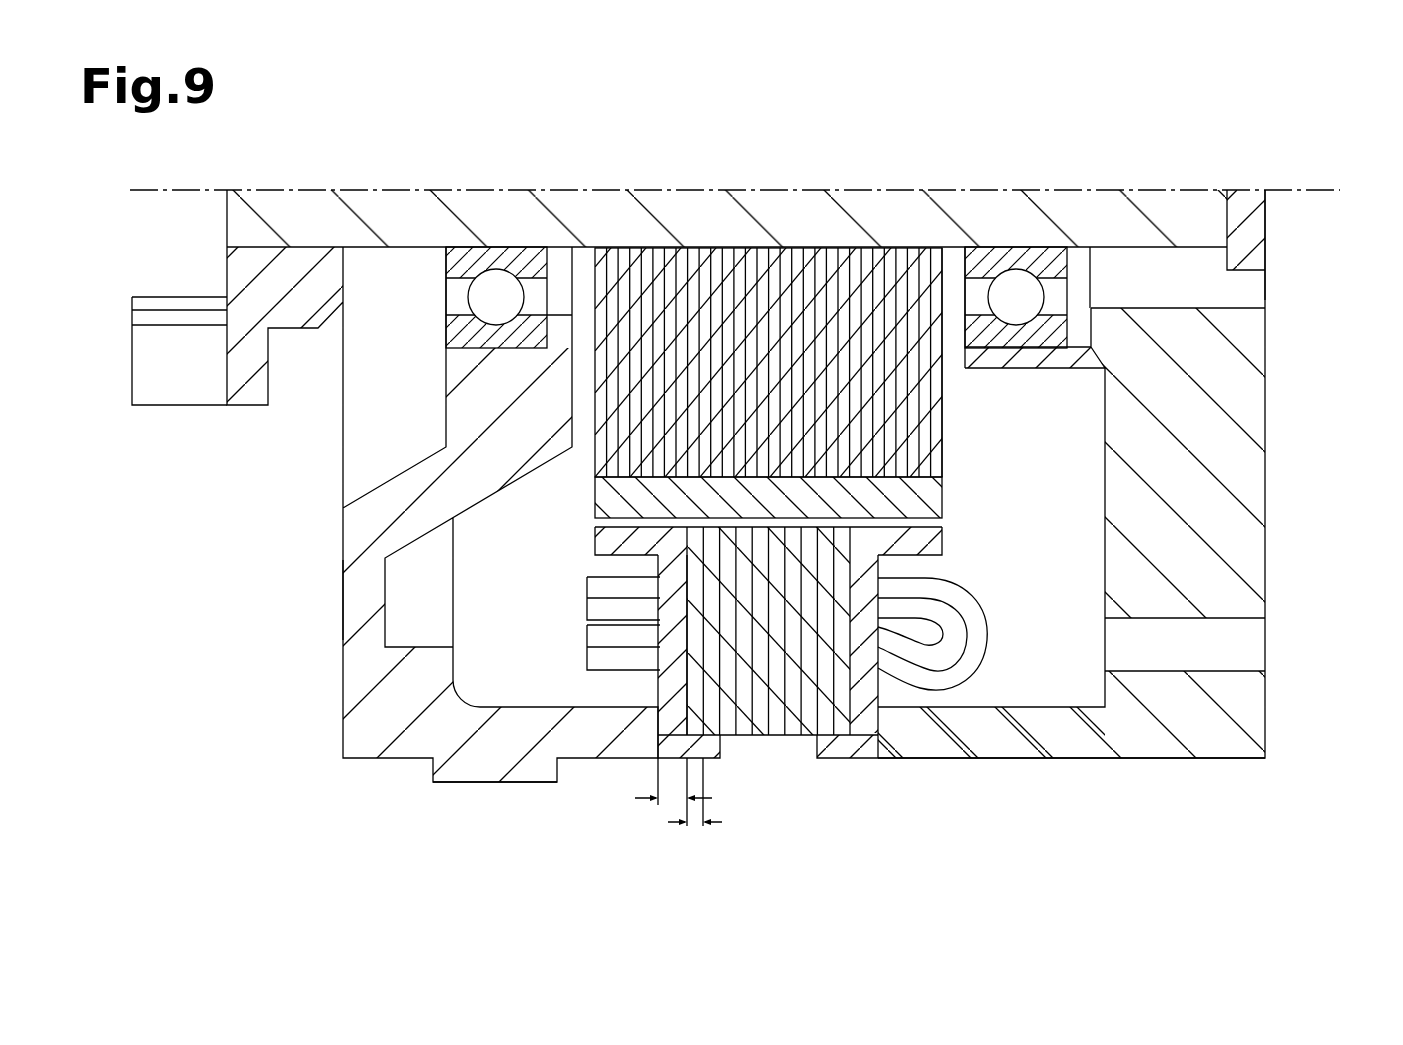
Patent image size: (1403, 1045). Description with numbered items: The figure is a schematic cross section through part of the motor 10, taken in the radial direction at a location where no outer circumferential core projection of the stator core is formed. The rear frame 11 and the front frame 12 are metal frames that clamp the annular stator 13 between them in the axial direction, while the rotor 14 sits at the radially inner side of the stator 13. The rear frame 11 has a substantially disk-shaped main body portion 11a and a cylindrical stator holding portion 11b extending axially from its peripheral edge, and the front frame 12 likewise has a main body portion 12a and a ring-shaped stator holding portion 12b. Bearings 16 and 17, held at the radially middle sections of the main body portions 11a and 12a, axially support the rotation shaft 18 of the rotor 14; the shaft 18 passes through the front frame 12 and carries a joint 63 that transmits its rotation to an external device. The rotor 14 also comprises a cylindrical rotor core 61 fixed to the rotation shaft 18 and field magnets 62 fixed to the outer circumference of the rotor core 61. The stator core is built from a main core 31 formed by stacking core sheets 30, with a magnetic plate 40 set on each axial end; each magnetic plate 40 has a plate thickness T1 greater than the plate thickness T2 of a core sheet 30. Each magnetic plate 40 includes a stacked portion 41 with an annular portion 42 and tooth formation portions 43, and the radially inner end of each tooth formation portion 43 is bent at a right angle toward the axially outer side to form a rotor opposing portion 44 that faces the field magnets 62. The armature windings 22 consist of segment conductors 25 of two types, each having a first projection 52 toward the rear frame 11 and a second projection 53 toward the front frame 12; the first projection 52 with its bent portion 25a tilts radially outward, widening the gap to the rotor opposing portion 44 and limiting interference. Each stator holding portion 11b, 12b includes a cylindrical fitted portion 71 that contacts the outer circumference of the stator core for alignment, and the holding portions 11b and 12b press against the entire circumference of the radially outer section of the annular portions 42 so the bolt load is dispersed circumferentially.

The motor 10 is at (1310, 325).
The rear frame 11 is at (1267, 482).
The main body portion 11a is at (1259, 547).
The stator holding portion 11b is at (997, 758).
The front frame 12 is at (343, 535).
The main body portion 12a is at (348, 597).
The stator holding portion 12b is at (575, 758).
The stator 13 is at (1018, 544).
The rotor 14 is at (950, 413).
The bearing 16 is at (1067, 266).
The bearing 17 is at (445, 265).
The rotation shaft 18 is at (1190, 237).
The armature windings 22 is at (985, 680).
The segment conductor 25 is at (975, 622).
The bent portion 25a is at (957, 680).
The core sheet 30 is at (776, 730).
The main core 31 is at (793, 735).
The magnetic plate 40 is at (658, 566).
The stacked portion 41 is at (658, 690).
The annular portion 42 is at (660, 720).
The tooth formation portion 43 is at (665, 592).
The rotor opposing portion 44 is at (595, 541).
The first projection 52 is at (960, 585).
The second projection 53 is at (587, 635).
The rotor core 61 is at (928, 450).
The field magnet 62 is at (942, 495).
The joint 63 is at (175, 405).
The fitted portion 71 is at (712, 755).
The plate thickness T1 is at (668, 802).
The plate thickness T2 is at (692, 823).